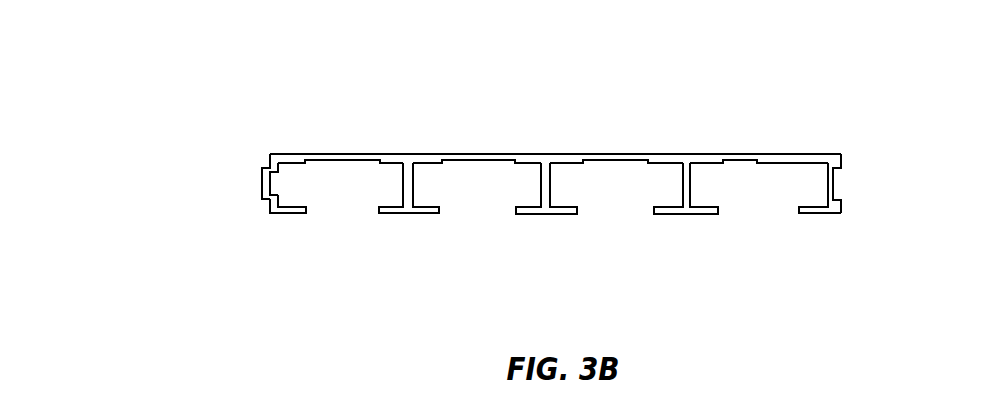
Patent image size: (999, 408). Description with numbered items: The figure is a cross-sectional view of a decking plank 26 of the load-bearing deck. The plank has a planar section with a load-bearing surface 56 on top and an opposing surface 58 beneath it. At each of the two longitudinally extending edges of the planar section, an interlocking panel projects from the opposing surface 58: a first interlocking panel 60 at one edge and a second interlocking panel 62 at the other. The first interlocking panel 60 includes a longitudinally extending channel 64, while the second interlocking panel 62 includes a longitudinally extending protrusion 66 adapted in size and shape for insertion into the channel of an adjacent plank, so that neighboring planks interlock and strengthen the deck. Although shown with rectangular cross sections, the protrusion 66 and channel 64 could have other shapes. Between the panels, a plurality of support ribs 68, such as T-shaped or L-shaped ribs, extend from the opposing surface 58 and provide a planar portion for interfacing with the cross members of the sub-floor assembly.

The decking plank 26 is at (569, 170).
The load-bearing surface 56 is at (738, 153).
The opposing surface 58 is at (756, 161).
The first interlocking panel 60 is at (842, 212).
The second interlocking panel 62 is at (290, 213).
The channel 64 is at (835, 185).
The protrusion 66 is at (262, 181).
The support ribs 68 is at (566, 217).